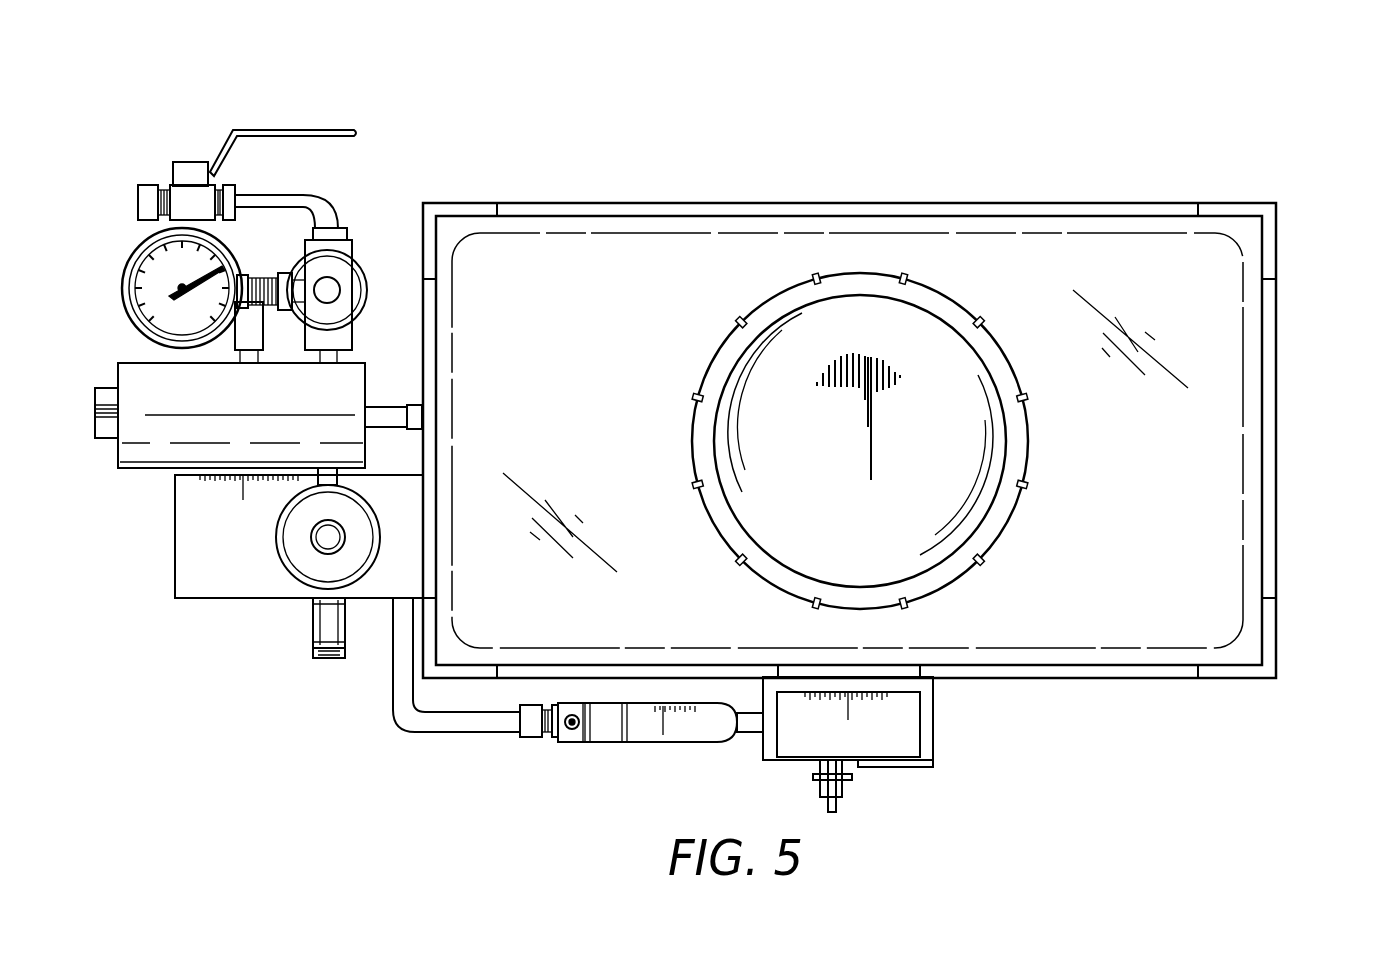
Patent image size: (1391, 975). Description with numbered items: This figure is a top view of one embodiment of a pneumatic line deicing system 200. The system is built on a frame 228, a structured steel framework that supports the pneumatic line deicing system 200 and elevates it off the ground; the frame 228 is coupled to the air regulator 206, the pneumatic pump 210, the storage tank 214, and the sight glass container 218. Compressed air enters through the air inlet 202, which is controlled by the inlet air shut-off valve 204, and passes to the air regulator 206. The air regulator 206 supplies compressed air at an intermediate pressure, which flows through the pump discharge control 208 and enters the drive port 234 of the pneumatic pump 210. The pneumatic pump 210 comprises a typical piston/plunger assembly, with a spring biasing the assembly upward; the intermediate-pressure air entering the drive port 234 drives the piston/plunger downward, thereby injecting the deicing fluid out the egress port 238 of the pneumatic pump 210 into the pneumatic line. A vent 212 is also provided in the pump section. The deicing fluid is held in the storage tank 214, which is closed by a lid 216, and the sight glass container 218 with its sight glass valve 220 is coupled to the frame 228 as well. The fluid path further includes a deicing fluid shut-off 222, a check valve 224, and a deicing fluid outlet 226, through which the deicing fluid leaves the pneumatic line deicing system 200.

The pneumatic line deicing system 200 is at (430, 70).
The air inlet 202 is at (138, 202).
The inlet air shut-off valve 204 is at (278, 127).
The air regulator 206 is at (352, 248).
The pump discharge control 208 is at (145, 364).
The pneumatic pump 210 is at (278, 552).
The vent 212 is at (233, 347).
The storage tank 214 is at (847, 440).
The lid 216 is at (860, 441).
The sight glass container 218 is at (796, 760).
The sight glass valve 220 is at (848, 782).
The deicing fluid shut-off 222 is at (663, 729).
The check valve 224 is at (313, 625).
The deicing fluid outlet 226 is at (330, 660).
The frame 228 is at (1277, 218).
The drive port 234 is at (317, 485).
The egress port 238 is at (297, 588).